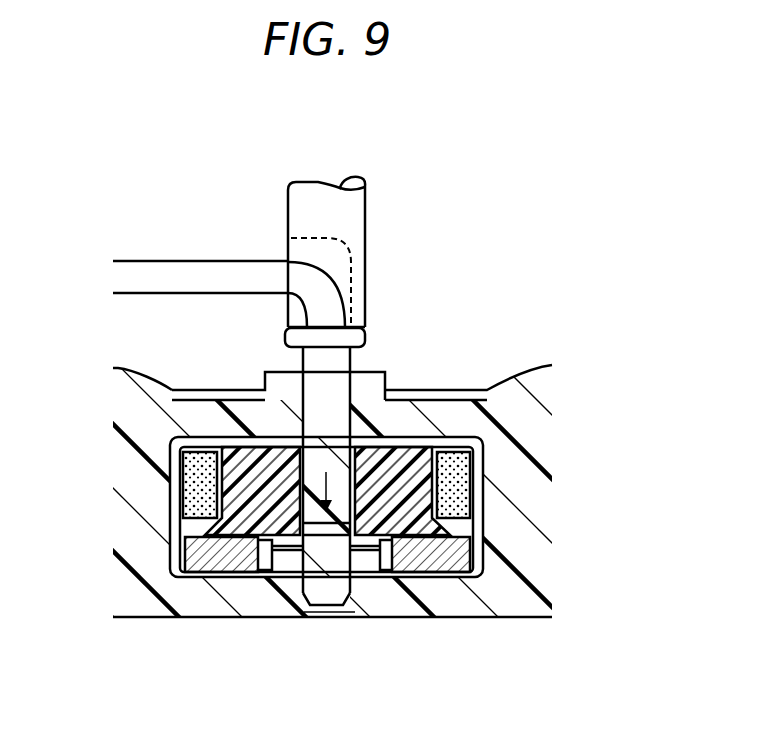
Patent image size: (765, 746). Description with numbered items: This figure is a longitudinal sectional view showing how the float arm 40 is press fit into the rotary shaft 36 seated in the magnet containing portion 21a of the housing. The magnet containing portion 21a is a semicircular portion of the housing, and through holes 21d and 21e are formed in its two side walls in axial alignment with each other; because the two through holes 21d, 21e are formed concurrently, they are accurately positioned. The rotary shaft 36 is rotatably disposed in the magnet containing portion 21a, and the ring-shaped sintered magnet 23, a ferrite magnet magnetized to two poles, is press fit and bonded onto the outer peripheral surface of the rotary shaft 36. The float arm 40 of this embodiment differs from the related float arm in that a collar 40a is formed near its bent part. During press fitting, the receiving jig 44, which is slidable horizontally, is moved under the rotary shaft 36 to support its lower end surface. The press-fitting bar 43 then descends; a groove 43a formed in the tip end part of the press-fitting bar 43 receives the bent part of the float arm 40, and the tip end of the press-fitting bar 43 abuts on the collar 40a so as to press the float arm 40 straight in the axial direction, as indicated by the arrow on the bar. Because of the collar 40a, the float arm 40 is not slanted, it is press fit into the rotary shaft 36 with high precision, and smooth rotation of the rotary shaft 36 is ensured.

The magnet containing portion 21a is at (500, 422).
The through hole 21d is at (292, 375).
The through hole 21e is at (306, 568).
The sintered magnet 23 is at (485, 487).
The rotary shaft 36 is at (218, 433).
The float arm 40 is at (165, 250).
The collar 40a is at (363, 352).
The press-fitting bar 43 is at (378, 202).
The groove 43a is at (283, 252).
The receiving jig 44 is at (218, 578).